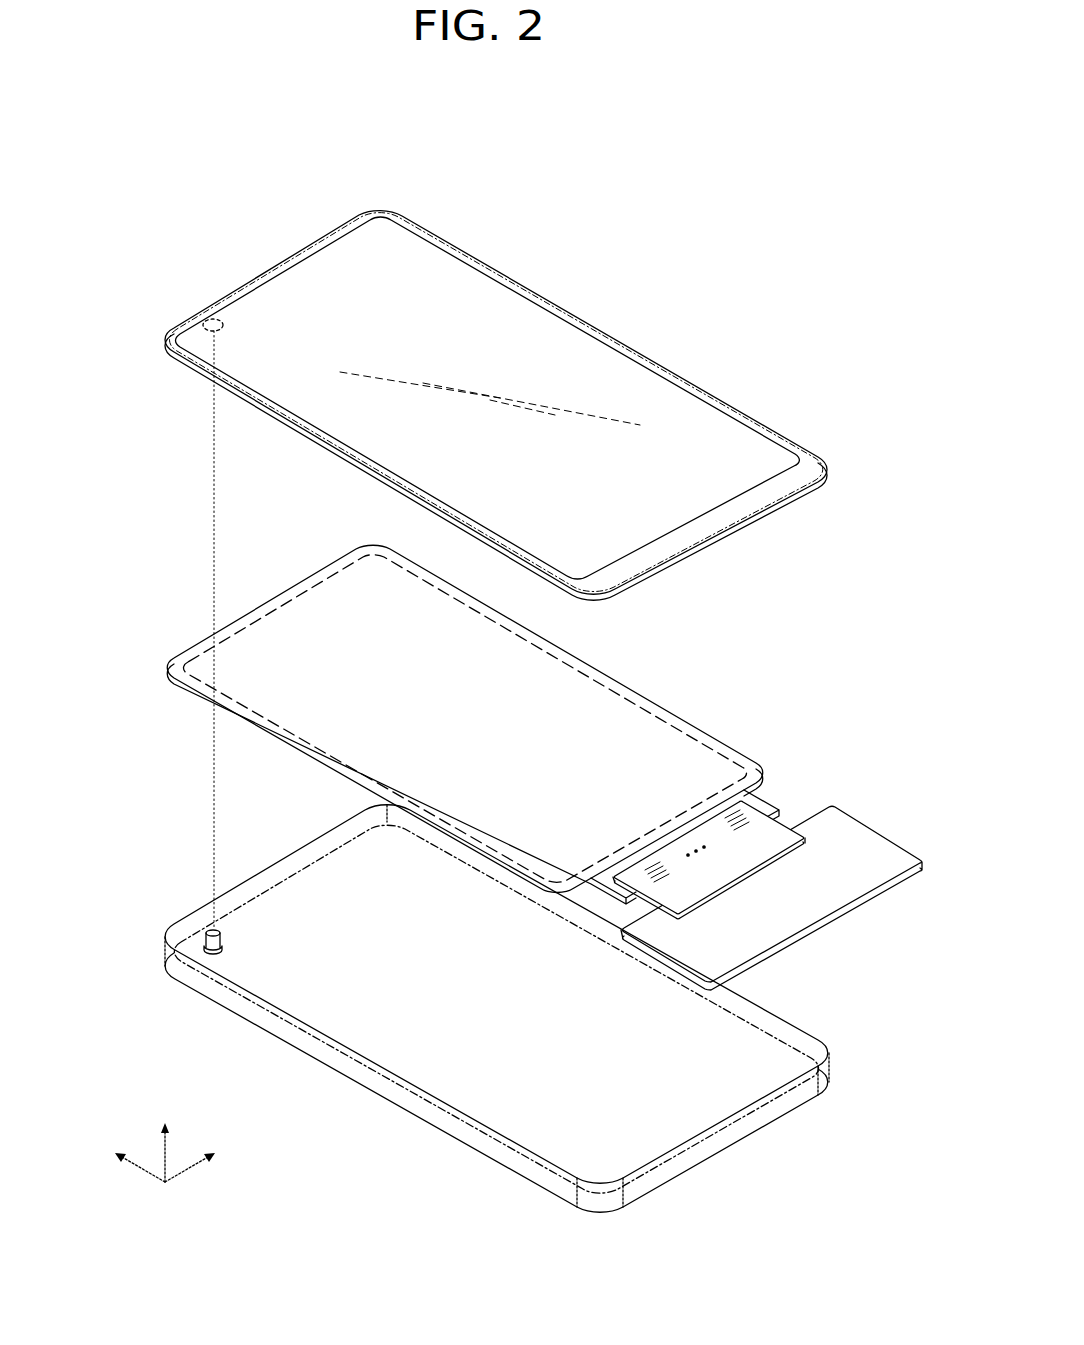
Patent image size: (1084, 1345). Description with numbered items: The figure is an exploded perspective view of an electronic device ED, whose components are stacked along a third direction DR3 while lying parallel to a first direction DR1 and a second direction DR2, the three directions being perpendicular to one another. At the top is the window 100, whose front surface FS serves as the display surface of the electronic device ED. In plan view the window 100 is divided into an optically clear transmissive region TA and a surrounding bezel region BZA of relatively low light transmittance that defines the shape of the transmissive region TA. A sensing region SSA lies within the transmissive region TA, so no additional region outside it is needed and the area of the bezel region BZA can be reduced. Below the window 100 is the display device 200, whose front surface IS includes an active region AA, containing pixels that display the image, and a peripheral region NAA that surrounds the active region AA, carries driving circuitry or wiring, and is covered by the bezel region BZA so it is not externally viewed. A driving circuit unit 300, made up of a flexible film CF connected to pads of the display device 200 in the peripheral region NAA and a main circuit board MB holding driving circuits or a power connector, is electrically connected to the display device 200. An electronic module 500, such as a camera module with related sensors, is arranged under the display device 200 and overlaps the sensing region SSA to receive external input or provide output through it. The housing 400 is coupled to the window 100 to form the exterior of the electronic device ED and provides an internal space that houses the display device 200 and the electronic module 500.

The electronic device ED is at (636, 250).
The window 100 is at (160, 343).
The front surface FS is at (307, 145).
The transmissive region TA is at (296, 282).
The bezel region BZA is at (340, 233).
The sensing region SSA is at (212, 319).
The display device 200 is at (165, 677).
The front surface IS is at (190, 515).
The active region AA is at (238, 647).
The peripheral region NAA is at (258, 610).
The driving circuit unit 300 is at (848, 730).
The flexible film CF is at (760, 845).
The main circuit board MB is at (853, 857).
The housing 400 is at (165, 960).
The electronic module 500 is at (209, 928).
The first direction DR1 is at (215, 1157).
The second direction DR2 is at (116, 1157).
The third direction DR3 is at (164, 1138).